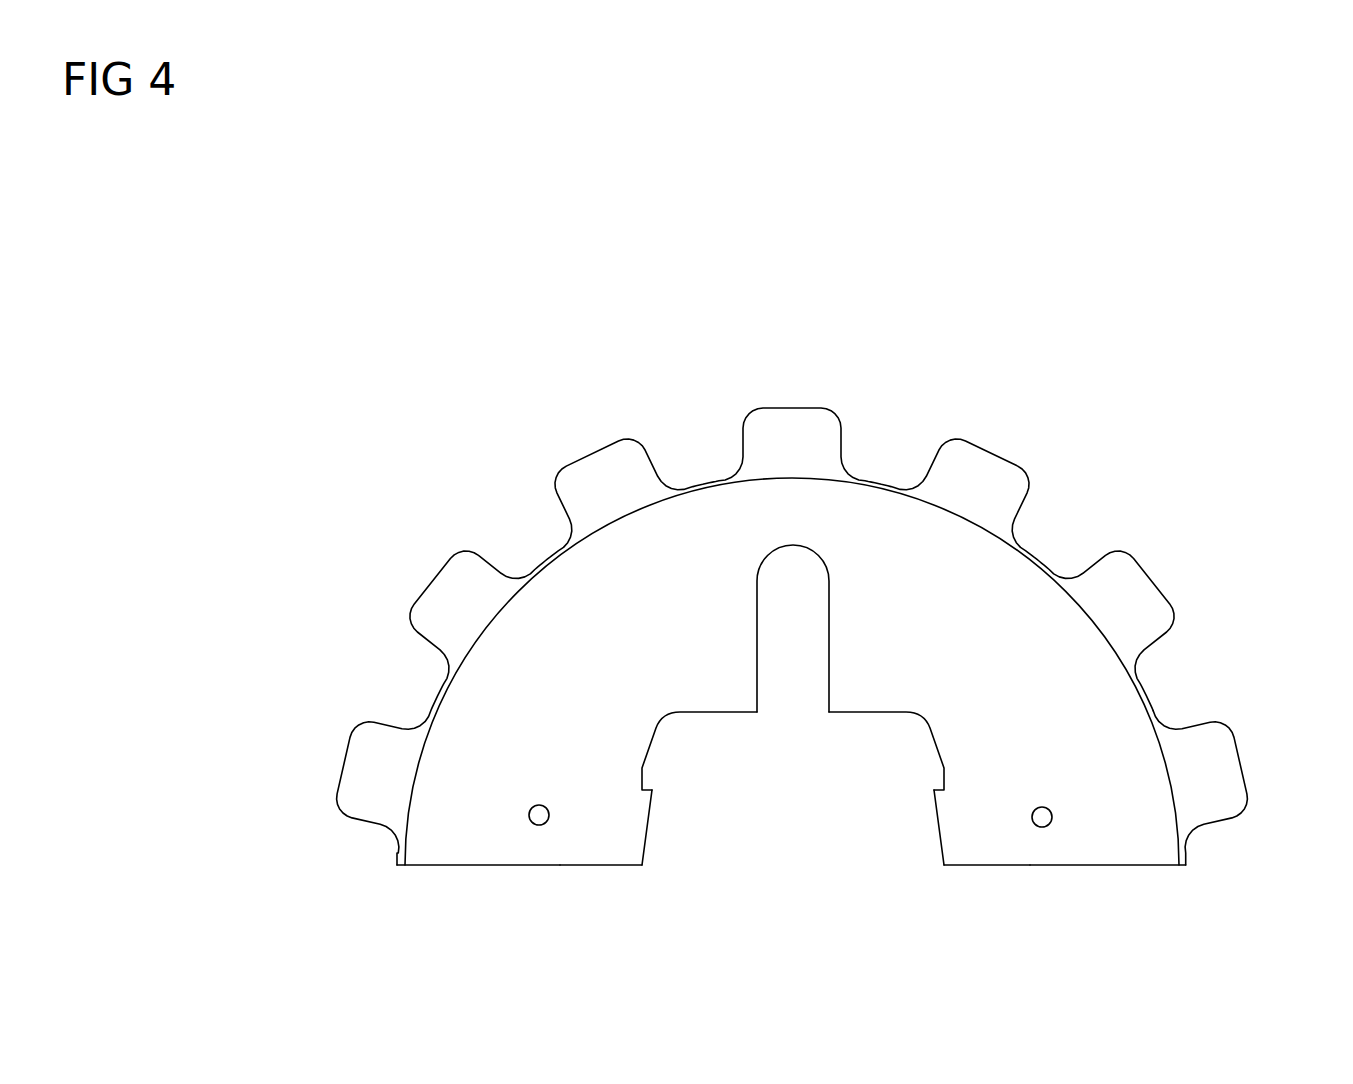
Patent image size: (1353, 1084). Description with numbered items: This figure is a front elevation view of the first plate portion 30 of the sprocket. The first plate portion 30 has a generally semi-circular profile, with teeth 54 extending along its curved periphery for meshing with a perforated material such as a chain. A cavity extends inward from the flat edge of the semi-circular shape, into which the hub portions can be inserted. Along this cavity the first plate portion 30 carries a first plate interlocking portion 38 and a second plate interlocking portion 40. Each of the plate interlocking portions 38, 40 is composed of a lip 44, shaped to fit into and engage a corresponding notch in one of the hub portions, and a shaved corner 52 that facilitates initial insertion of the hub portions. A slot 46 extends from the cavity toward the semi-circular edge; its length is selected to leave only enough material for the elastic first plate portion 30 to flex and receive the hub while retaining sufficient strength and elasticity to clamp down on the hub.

The first plate portion 30 is at (326, 433).
The first plate interlocking portion 38 is at (910, 823).
The second plate interlocking portion 40 is at (663, 840).
The lip 44 is at (653, 803).
The slot 46 is at (800, 577).
The shaved corner 52 is at (647, 855).
The teeth 54 is at (1213, 782).